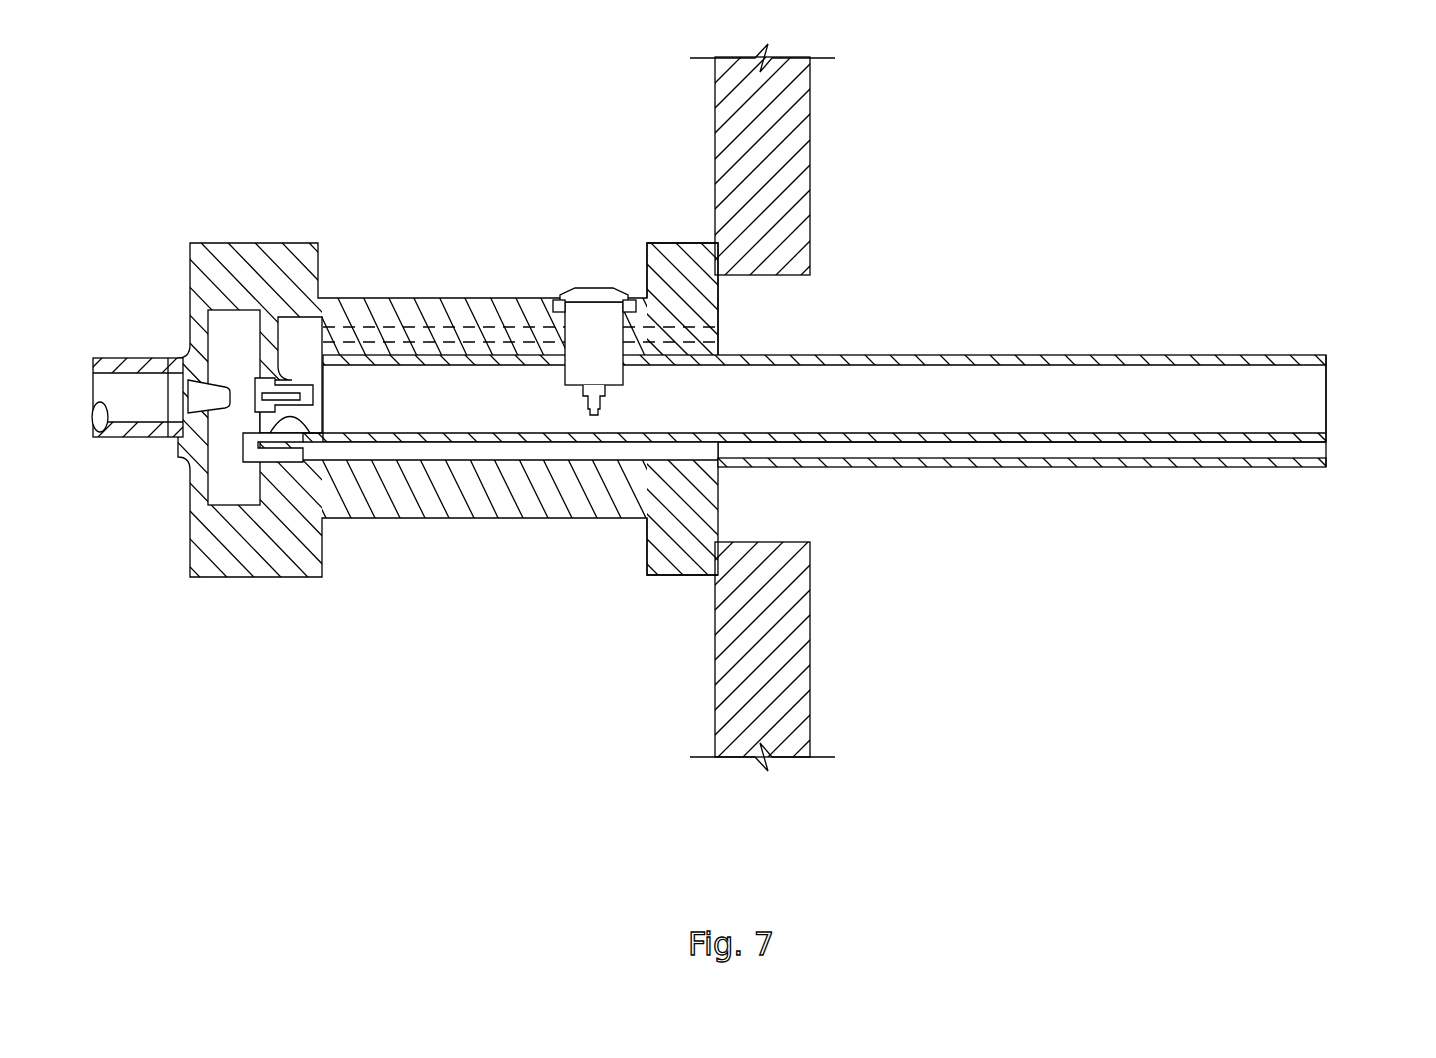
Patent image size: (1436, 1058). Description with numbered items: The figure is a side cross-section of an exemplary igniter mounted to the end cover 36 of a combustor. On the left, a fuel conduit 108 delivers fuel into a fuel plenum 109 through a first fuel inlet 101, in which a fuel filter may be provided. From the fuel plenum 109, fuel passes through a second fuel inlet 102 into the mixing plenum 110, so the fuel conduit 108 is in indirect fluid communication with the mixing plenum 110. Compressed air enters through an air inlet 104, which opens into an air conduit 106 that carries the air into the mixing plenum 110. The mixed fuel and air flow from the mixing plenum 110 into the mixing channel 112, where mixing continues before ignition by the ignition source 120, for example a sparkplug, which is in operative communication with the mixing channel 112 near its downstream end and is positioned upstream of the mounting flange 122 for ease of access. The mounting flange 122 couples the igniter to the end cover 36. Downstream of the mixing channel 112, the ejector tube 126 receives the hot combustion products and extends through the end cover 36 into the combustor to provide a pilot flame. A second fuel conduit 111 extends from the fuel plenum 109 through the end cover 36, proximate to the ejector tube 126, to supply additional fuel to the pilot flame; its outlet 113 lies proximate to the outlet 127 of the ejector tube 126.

The end cover 36 is at (785, 222).
The first fuel inlet 101 is at (200, 403).
The second fuel inlet 102 is at (300, 408).
The air inlet 104 is at (718, 333).
The air conduit 106 is at (395, 330).
The fuel conduit 108 is at (150, 385).
The fuel plenum 109 is at (230, 335).
The mixing plenum 110 is at (300, 335).
The second fuel conduit 111 is at (1082, 440).
The mixing channel 112 is at (515, 414).
The outlet of the second fuel conduit 113 is at (1328, 448).
The ignition source 120 is at (592, 292).
The mounting flange 122 is at (660, 565).
The ejector tube 126 is at (920, 378).
The outlet of the ejector tube 127 is at (1328, 390).